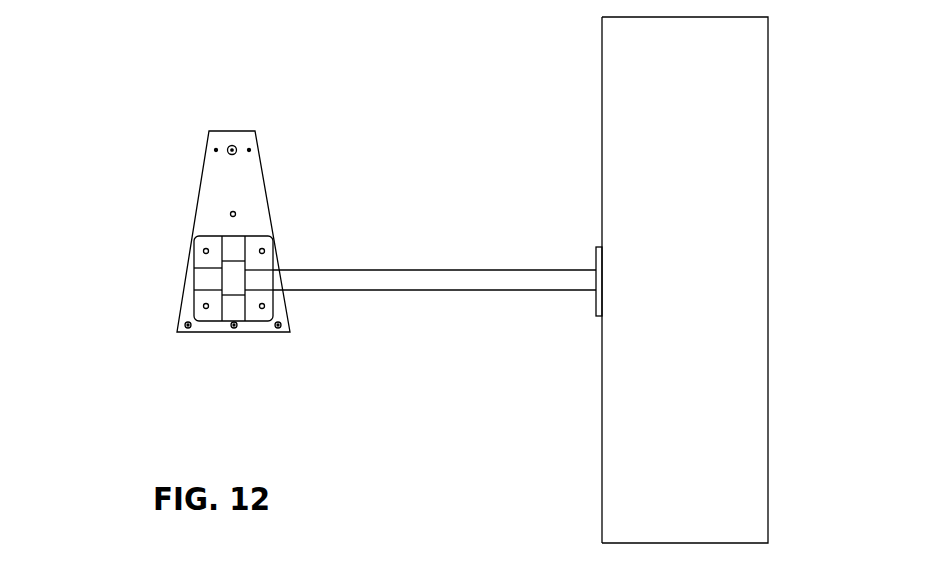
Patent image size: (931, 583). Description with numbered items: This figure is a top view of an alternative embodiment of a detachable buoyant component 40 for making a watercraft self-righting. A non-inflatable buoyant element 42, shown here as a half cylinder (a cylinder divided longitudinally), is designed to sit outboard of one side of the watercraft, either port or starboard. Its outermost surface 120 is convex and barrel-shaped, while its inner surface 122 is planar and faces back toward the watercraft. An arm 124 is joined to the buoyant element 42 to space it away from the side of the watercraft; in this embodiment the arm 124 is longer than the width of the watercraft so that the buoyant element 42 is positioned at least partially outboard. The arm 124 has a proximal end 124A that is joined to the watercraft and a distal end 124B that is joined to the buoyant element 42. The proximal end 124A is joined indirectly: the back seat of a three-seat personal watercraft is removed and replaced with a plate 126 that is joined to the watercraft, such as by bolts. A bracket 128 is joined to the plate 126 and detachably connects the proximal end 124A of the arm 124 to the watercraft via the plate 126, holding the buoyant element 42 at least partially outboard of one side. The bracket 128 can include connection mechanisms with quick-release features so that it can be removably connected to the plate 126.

The mounting assembly 40 is at (408, 358).
The buoyant element 42 is at (727, 252).
The outermost surface 120 is at (768, 430).
The inner surface 122 is at (600, 388).
The arm 124 is at (425, 283).
The proximal end 124A is at (210, 277).
The distal end 124B is at (587, 270).
The plate 126 is at (218, 181).
The bracket 128 is at (252, 250).